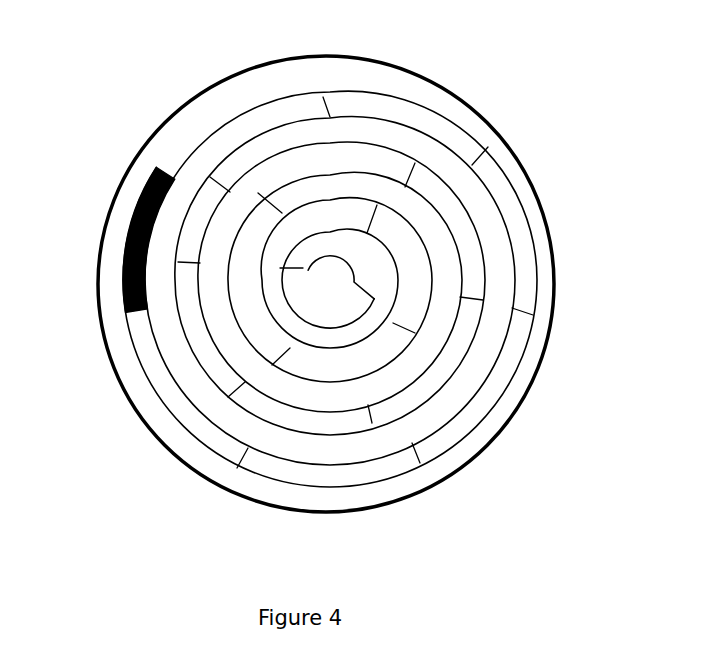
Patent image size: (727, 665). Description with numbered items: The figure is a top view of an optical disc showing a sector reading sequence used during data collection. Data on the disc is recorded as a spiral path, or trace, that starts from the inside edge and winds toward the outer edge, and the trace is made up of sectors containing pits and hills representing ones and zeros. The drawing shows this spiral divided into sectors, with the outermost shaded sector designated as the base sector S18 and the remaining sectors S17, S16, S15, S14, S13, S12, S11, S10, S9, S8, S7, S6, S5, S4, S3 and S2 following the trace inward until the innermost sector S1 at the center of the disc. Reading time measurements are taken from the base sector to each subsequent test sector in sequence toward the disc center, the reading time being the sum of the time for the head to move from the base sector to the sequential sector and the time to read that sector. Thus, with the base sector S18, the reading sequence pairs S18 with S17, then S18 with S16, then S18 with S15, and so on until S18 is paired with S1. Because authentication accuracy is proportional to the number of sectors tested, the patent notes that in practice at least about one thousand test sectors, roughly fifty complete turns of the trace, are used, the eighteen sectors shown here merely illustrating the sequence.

The sector S1 is at (308, 300).
The sector S2 is at (338, 218).
The sector S3 is at (418, 265).
The sector S4 is at (360, 357).
The sector S5 is at (240, 283).
The sector S6 is at (365, 157).
The sector S7 is at (463, 223).
The sector S8 is at (427, 372).
The sector S9 is at (292, 418).
The sector S10 is at (200, 342).
The sector S11 is at (200, 218).
The sector S12 is at (245, 150).
The sector S13 is at (417, 115).
The sector S14 is at (520, 222).
The sector S15 is at (505, 360).
The sector S16 is at (337, 477).
The sector S17 is at (172, 402).
The base sector S18 is at (123, 252).